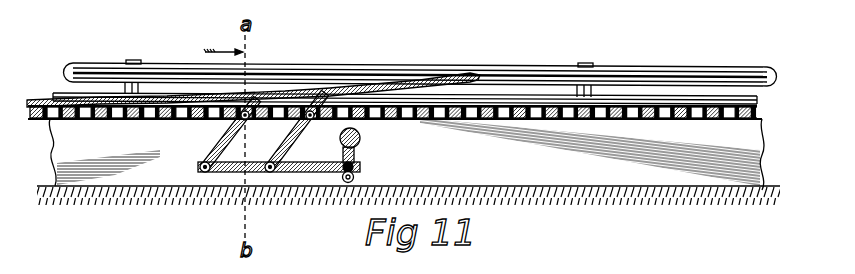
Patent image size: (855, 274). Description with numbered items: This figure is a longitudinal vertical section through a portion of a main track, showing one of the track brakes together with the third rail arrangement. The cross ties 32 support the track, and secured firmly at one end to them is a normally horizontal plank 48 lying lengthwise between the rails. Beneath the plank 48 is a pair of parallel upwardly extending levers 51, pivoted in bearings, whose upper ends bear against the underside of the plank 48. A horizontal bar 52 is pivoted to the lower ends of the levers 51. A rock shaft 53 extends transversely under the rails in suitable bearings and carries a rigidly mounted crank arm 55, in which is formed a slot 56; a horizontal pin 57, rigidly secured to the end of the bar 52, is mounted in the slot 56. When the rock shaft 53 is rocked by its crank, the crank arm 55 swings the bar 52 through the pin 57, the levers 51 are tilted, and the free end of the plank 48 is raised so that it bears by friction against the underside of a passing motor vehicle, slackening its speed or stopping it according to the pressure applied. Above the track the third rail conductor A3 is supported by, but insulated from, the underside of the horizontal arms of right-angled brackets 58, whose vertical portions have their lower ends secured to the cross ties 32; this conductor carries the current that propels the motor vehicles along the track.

The cross ties 32 is at (453, 112).
The plank 48 is at (462, 75).
The lever 51 is at (246, 127).
The horizontal bar 52 is at (286, 146).
The rock shaft 53 is at (361, 132).
The crank arm 55 is at (355, 150).
The slot 56 is at (355, 177).
The horizontal pin 57 is at (523, 97).
The right-angled bracket 58 is at (133, 60).
The third rail conductor A3 is at (551, 70).